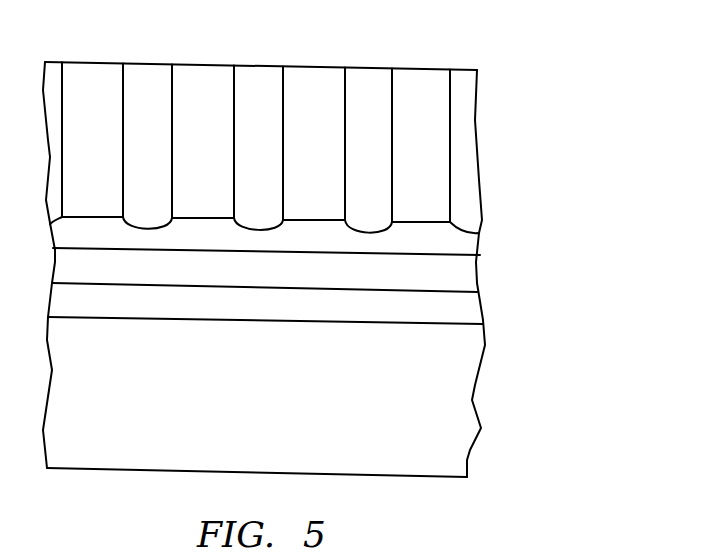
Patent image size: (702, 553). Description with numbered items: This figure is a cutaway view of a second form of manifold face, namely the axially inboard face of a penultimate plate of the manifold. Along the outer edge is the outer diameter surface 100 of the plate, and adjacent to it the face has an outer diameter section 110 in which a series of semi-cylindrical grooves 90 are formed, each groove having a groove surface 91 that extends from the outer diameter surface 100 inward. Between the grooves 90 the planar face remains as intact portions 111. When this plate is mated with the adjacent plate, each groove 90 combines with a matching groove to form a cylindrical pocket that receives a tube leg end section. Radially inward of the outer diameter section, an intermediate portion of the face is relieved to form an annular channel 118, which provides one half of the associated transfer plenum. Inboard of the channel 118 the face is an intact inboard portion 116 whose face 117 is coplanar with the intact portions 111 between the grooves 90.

The groove 90 is at (370, 90).
The groove surface 91 is at (367, 140).
The outer diameter surface 100 is at (428, 65).
The outer diameter section 110 is at (499, 147).
The intact portion 111 is at (427, 138).
The intact inboard portion 116 is at (499, 395).
The face 117 is at (405, 447).
The annular channel 118 is at (472, 270).